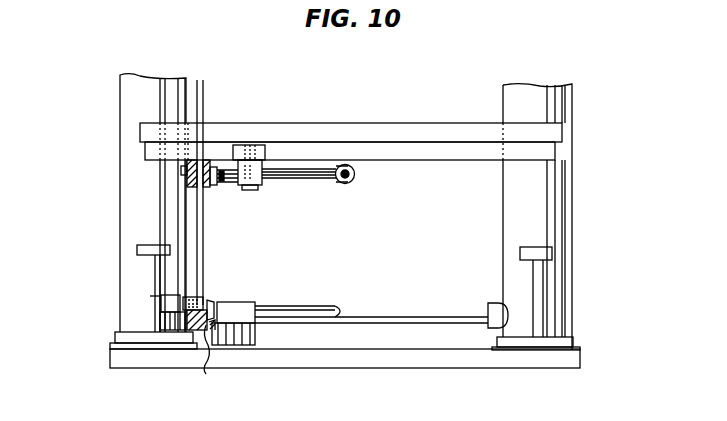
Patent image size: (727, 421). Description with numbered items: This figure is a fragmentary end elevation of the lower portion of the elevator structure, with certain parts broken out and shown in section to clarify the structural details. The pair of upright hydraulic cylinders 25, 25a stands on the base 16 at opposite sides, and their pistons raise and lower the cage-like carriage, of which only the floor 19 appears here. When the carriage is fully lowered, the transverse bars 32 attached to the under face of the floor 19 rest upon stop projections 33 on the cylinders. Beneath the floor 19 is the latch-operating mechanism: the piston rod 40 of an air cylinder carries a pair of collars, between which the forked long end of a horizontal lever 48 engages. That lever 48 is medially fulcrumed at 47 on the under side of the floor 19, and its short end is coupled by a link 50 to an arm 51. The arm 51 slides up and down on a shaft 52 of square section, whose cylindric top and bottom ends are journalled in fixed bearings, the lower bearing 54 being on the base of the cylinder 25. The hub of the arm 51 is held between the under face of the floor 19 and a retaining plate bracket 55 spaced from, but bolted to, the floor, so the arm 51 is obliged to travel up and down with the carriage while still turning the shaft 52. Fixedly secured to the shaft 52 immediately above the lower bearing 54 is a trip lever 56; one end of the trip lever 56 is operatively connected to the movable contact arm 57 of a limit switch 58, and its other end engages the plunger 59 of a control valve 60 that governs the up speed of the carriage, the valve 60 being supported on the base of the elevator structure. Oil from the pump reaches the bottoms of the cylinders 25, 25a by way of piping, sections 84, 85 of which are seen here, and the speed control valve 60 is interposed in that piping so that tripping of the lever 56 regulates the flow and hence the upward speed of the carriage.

The base 16 is at (348, 352).
The floor 19 is at (350, 124).
The hydraulic cylinder 25 is at (122, 155).
The hydraulic cylinder 25a is at (565, 200).
The transverse bar 32 is at (412, 161).
The stop projection 33 is at (137, 254).
The piston rod 40 is at (355, 176).
The fulcrum 47 is at (256, 190).
The horizontal lever 48 is at (311, 178).
The link 50 is at (230, 186).
The arm 51 is at (213, 187).
The shaft 52 is at (203, 93).
The lower bearing 54 is at (212, 361).
The retaining plate bracket 55 is at (187, 183).
The trip lever 56 is at (212, 299).
The movable contact arm 57 is at (183, 304).
The limit switch 58 is at (161, 298).
The plunger 59 is at (214, 312).
The control valve 60 is at (244, 303).
The piping 84 is at (291, 307).
The piping 85 is at (421, 317).